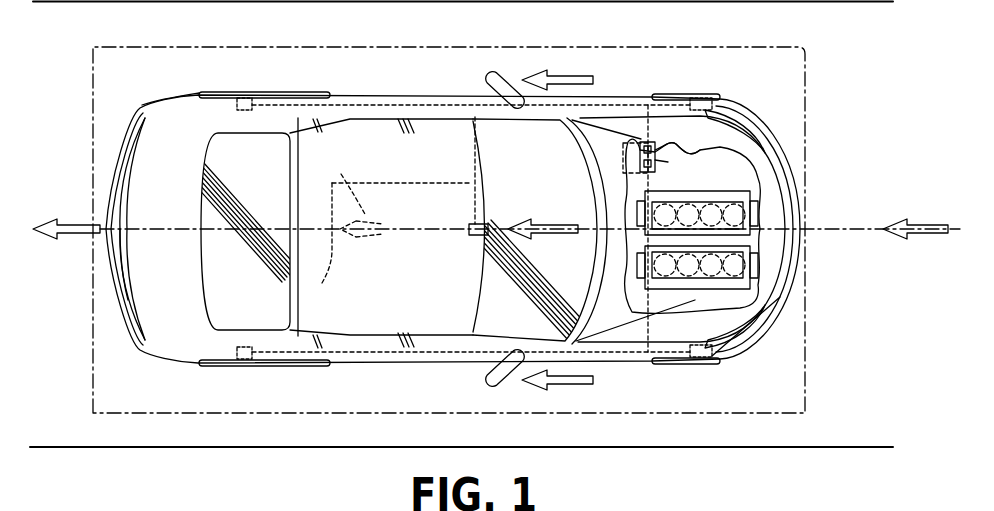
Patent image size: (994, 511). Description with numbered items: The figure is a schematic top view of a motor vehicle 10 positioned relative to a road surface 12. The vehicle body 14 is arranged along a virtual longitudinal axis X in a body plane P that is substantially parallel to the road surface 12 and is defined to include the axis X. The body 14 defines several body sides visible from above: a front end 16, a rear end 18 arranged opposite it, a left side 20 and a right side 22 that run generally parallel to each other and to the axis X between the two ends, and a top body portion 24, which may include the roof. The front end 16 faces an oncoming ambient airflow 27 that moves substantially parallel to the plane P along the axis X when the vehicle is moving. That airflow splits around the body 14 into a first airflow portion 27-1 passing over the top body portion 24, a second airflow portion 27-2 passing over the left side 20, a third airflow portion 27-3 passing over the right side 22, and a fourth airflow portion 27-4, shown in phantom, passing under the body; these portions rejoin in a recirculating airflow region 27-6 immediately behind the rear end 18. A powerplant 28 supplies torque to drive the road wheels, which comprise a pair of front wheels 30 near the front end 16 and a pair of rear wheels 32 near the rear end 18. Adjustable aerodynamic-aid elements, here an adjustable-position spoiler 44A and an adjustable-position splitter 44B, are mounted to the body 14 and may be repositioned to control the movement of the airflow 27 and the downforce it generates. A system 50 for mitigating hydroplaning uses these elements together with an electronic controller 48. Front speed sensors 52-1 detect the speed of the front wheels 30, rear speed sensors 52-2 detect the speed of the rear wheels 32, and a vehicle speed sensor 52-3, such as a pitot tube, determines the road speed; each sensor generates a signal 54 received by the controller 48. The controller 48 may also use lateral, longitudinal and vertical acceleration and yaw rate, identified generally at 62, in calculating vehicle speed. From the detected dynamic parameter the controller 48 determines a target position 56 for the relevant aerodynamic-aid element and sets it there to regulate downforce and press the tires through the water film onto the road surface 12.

The motor vehicle 10 is at (783, 378).
The road surface 12 is at (471, 442).
The vehicle body 14 is at (398, 163).
The front end 16 is at (780, 182).
The rear end 18 is at (104, 205).
The left side 20 is at (468, 100).
The right side 22 is at (455, 368).
The top body portion 24 is at (413, 236).
The ambient airflow 27 is at (925, 226).
The first airflow portion 27-1 is at (557, 238).
The second airflow portion 27-2 is at (568, 72).
The third airflow portion 27-3 is at (570, 384).
The fourth airflow portion 27-4 is at (400, 194).
The recirculating airflow region 27-6 is at (77, 234).
The powerplant 28 is at (733, 190).
The front wheels 30 is at (708, 97).
The rear wheels 32 is at (212, 92).
The adjustable-position spoiler 44A is at (122, 300).
The adjustable-position splitter 44B is at (797, 272).
The electronic controller 48 is at (647, 141).
The system 50 is at (688, 141).
The front speed sensor 52-1 is at (697, 98).
The rear speed sensor 52-2 is at (248, 97).
The vehicle speed sensor 52-3 is at (473, 238).
The signal 54 is at (672, 148).
The target position 56 is at (660, 160).
The vehicle dynamic quantities 62 is at (317, 243).
The body plane P is at (227, 414).
The longitudinal axis X is at (855, 231).